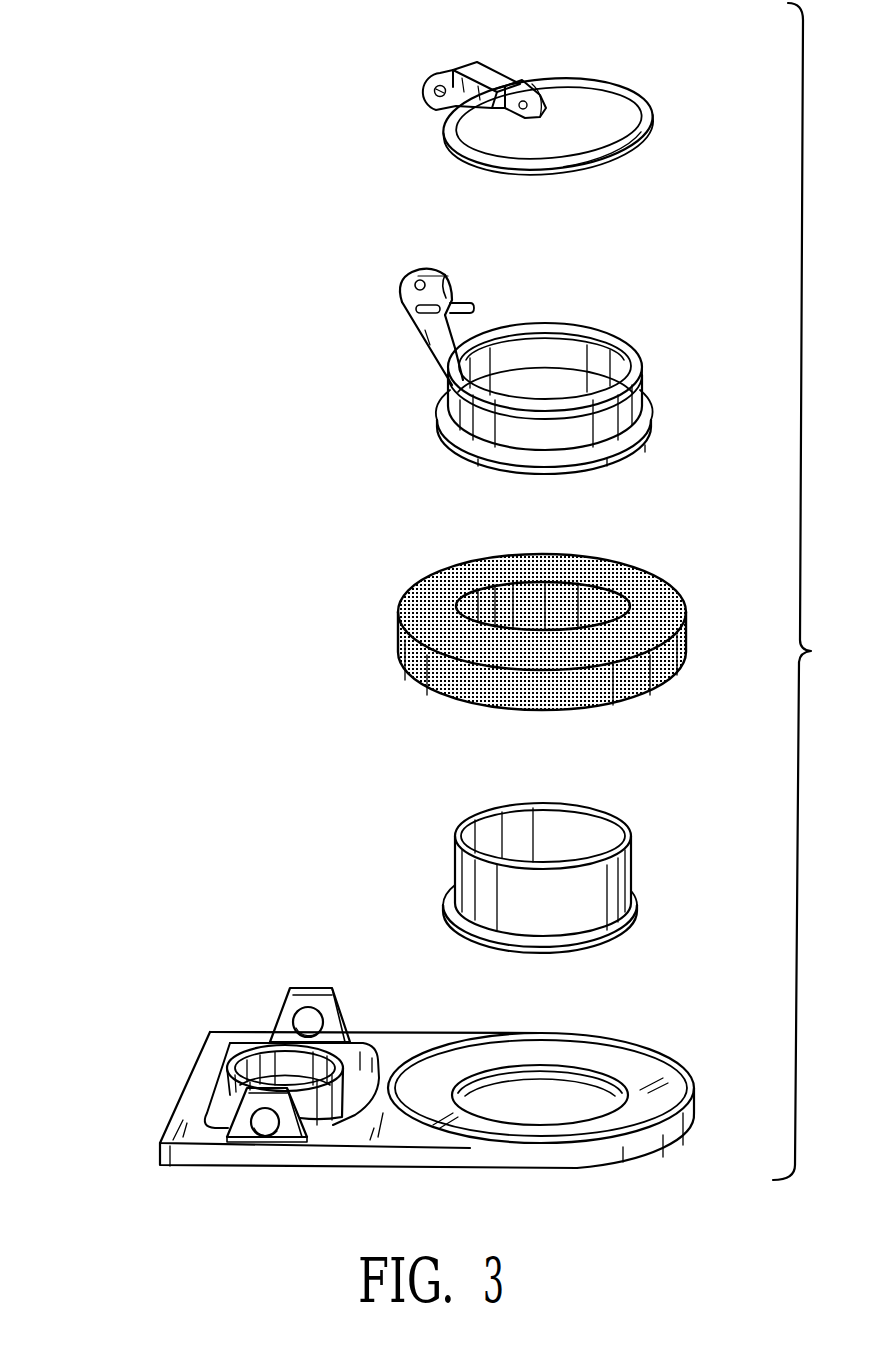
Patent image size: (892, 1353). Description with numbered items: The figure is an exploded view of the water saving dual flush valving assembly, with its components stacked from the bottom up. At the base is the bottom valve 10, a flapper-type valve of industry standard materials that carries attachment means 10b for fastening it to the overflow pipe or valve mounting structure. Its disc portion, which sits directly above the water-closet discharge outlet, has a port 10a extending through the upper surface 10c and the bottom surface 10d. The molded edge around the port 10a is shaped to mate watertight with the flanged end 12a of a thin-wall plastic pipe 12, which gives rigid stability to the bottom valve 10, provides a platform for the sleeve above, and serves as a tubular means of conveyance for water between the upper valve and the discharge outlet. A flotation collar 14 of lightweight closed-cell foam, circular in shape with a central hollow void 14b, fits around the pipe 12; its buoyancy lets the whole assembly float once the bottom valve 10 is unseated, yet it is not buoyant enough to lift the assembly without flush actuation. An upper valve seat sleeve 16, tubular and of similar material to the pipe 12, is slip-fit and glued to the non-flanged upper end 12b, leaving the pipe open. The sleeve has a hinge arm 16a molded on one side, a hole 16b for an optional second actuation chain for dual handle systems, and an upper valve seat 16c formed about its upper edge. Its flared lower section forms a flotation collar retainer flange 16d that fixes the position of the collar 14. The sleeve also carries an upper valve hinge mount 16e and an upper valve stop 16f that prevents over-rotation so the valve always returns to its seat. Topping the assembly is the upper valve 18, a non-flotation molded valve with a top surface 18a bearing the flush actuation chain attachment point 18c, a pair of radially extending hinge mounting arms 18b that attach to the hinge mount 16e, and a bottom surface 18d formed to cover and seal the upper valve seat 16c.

The bottom valve 10 is at (150, 998).
The port 10a is at (552, 1112).
The attachment means 10b is at (273, 1042).
The upper surface of bottom valve 10c is at (407, 1043).
The bottom surface of bottom valve 10d is at (665, 1150).
The pipe 12 is at (666, 772).
The flanged end of pipe 12a is at (641, 920).
The upper end of pipe 12b is at (482, 808).
The flotation collar 14 is at (395, 556).
The central hollow void 14b is at (580, 605).
The upper valve seat sleeve 16 is at (686, 324).
The hinge arm 16a is at (400, 315).
The hole for optional second actuation chain attachment 16b is at (408, 280).
The upper valve seat 16c is at (571, 325).
The flotation collar retainer flange 16d is at (651, 432).
The upper valve hinge mount 16e is at (474, 306).
The upper valve stop 16f is at (448, 290).
The upper valve 18 is at (404, 38).
The top surface of upper valve 18a is at (641, 121).
The hinge mounting arms 18b is at (500, 64).
The flush actuation chain attachment point 18c is at (520, 80).
The bottom surface of upper valve 18d is at (622, 166).